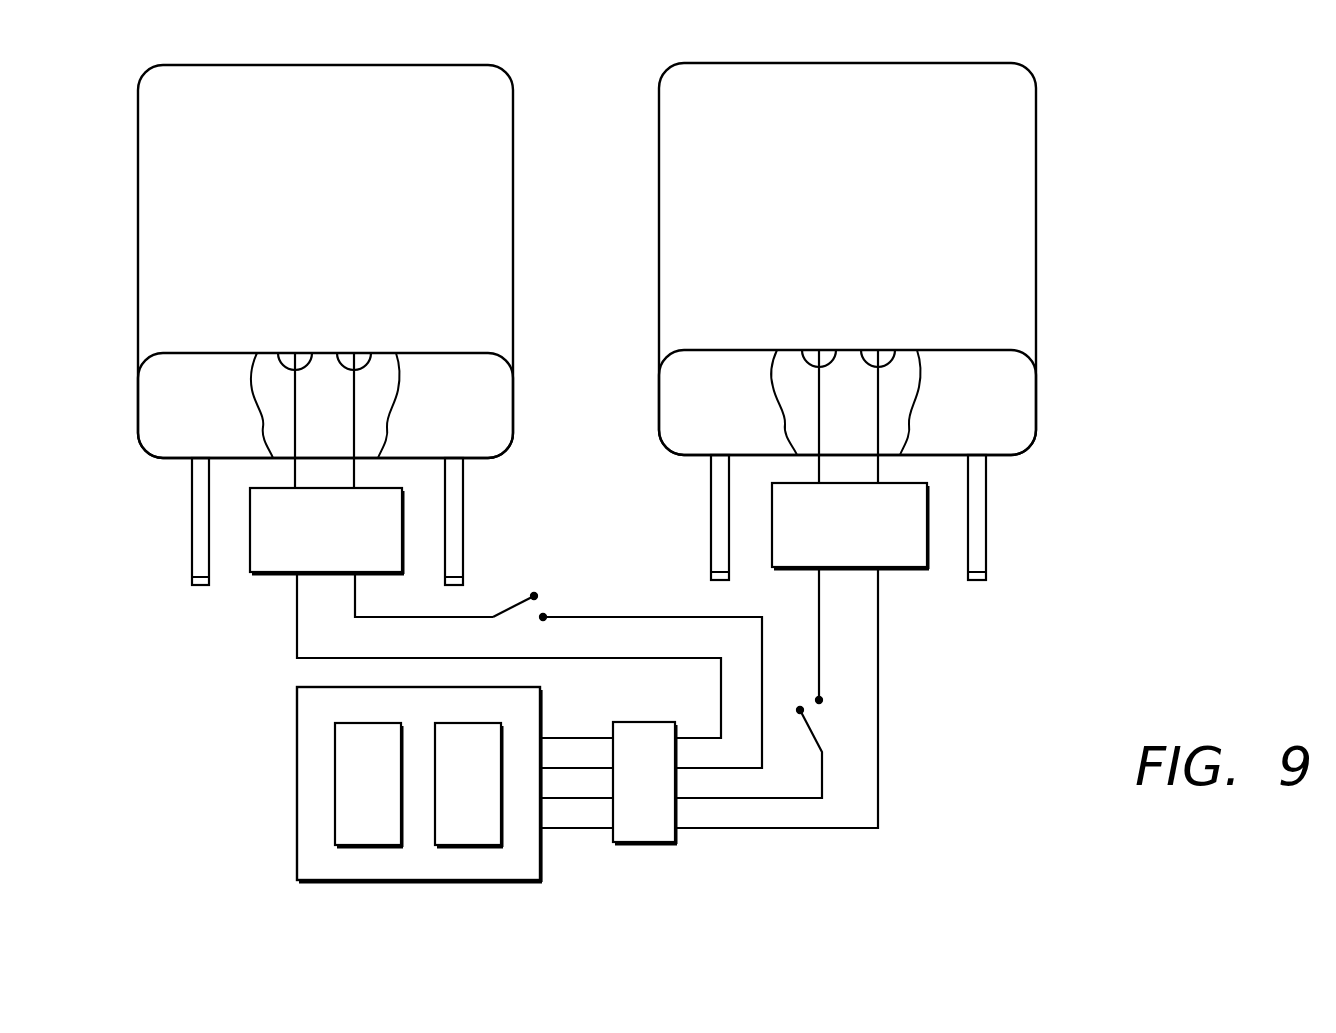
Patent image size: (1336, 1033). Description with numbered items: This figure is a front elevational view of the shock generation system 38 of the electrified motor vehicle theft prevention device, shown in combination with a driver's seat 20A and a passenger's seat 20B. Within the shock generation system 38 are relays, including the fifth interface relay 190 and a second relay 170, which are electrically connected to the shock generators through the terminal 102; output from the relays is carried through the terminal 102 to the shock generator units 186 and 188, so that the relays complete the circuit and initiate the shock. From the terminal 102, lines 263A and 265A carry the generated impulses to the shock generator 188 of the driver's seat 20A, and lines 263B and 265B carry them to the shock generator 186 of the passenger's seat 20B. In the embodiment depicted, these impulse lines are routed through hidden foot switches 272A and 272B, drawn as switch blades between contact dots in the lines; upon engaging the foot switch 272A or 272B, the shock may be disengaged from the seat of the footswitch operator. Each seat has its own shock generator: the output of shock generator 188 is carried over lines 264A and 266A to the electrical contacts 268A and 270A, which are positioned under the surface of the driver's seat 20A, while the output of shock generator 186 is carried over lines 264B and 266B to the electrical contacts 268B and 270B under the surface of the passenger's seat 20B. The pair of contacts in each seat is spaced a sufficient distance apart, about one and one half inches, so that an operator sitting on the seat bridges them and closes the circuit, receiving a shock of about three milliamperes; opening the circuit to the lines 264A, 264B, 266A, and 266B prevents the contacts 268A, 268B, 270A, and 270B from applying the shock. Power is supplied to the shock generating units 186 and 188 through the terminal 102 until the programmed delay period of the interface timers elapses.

The driver's seat 20A is at (513, 105).
The passenger's seat 20B is at (1034, 102).
The line 264A is at (293, 422).
The line 266A is at (355, 400).
The electrical contact 268A is at (283, 350).
The electrical contact 270A is at (362, 350).
The line 264B is at (817, 417).
The line 266B is at (878, 397).
The electrical contact 268B is at (804, 349).
The electrical contact 270B is at (886, 349).
The shock generator unit 188 is at (268, 572).
The shock generator unit 186 is at (908, 570).
The line 263A is at (293, 630).
The line 265A is at (453, 617).
The hidden foot switch 272A is at (545, 603).
The line 263B is at (820, 640).
The line 265B is at (880, 749).
The hidden foot switch 272B is at (815, 712).
The shock generation system 38 is at (297, 758).
The fifth interface relay 190 is at (335, 844).
The second relay 170 is at (501, 844).
The terminal 102 is at (675, 835).